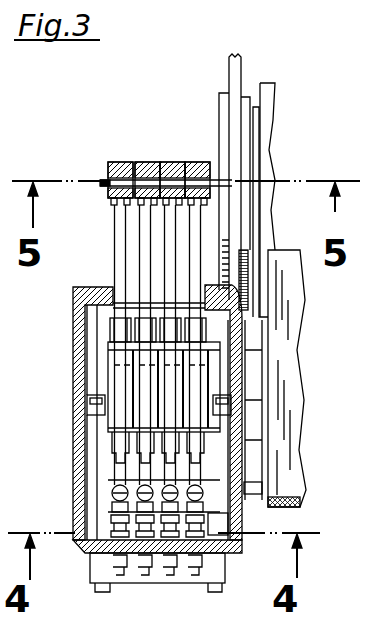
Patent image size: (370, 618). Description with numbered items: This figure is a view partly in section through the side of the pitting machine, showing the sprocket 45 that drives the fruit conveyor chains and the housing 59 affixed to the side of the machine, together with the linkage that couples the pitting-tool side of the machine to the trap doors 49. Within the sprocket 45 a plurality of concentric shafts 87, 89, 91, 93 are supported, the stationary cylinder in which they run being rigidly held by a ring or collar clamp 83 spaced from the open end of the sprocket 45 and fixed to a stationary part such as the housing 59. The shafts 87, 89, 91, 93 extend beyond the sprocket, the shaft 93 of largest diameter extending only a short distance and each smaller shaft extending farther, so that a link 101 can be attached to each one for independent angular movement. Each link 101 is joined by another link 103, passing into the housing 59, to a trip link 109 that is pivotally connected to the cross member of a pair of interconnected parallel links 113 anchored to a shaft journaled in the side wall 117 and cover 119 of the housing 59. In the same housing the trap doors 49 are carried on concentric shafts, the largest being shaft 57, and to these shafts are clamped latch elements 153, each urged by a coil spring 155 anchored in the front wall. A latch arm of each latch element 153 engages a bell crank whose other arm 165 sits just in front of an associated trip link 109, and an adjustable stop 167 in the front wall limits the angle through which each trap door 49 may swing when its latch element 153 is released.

The sprocket 45 is at (275, 148).
The trap door 49 is at (293, 365).
The concentric shaft of largest diameter 57 is at (258, 494).
The housing 59 is at (240, 520).
The ring or collar clamp 83 is at (222, 118).
The concentric shaft 87 is at (122, 170).
The concentric shaft 89 is at (151, 170).
The concentric shaft 91 is at (178, 170).
The concentric shaft of largest diameter 93 is at (205, 170).
The link 101 is at (108, 188).
The link 103 is at (120, 238).
The trip link 109 is at (110, 328).
The parallel links 113 is at (110, 360).
The side wall 117 is at (238, 455).
The cover 119 is at (78, 402).
The latch element 153 is at (110, 500).
The coil spring 155 is at (236, 545).
The arm of bell crank 165 is at (120, 382).
The adjustable stop 167 is at (90, 552).